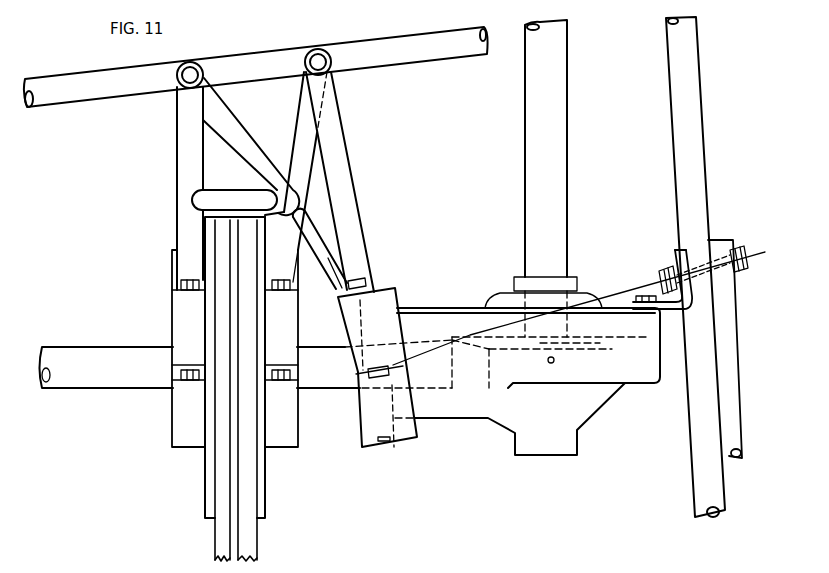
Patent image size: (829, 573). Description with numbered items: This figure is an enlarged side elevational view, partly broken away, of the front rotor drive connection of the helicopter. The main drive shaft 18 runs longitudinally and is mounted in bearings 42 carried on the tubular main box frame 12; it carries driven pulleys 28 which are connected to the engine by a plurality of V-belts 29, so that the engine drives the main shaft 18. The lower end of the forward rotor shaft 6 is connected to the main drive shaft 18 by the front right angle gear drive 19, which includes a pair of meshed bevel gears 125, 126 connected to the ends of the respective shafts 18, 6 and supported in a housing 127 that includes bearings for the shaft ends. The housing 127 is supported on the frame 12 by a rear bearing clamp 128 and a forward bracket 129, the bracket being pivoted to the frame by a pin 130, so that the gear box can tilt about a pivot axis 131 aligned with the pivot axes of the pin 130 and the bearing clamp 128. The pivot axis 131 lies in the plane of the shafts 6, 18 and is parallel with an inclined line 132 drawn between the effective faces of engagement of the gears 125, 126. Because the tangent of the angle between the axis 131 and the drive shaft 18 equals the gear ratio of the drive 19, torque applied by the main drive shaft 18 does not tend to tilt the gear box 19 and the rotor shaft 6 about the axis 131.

The main box frame 12 is at (97, 70).
The forward rotor shaft 6 is at (560, 102).
The main drive shaft 18 is at (98, 396).
The bearings 42 is at (180, 417).
The pulleys 28 is at (208, 478).
The V-belts 29 is at (244, 545).
The rear bearing clamp 128 is at (388, 432).
The bevel gear 125 is at (477, 376).
The inclined line 132 is at (553, 363).
The bevel gear 126 is at (585, 343).
The housing 127 is at (625, 385).
The front right angle gear drive 19 is at (572, 416).
The forward bracket 129 is at (683, 306).
The pin 130 is at (661, 273).
The pivot axis 131 is at (752, 254).